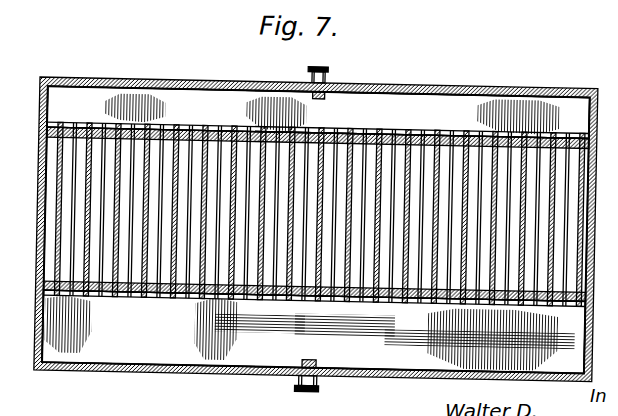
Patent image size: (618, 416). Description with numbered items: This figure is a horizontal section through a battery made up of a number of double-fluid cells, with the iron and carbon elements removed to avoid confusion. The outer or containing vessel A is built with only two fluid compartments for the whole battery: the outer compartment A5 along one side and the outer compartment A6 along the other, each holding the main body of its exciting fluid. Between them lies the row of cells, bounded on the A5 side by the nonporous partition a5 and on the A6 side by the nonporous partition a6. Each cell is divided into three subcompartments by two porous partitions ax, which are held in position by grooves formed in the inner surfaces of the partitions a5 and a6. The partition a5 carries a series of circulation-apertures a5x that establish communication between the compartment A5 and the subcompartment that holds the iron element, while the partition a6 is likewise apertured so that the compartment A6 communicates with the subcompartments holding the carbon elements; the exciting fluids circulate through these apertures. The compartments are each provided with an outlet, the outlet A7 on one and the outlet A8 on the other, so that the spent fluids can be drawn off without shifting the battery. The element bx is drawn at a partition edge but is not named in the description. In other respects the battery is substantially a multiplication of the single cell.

The outer vessel A is at (299, 228).
The outer compartment A5 is at (318, 112).
The outer compartment A6 is at (313, 331).
The outlet A7 is at (331, 66).
The outlet A8 is at (322, 385).
The porous partition ax is at (87, 132).
The nonporous partition a5 is at (160, 131).
The circulation-aperture a5x is at (148, 300).
The nonporous partition a6 is at (527, 296).
The tube plate edge bx is at (548, 298).